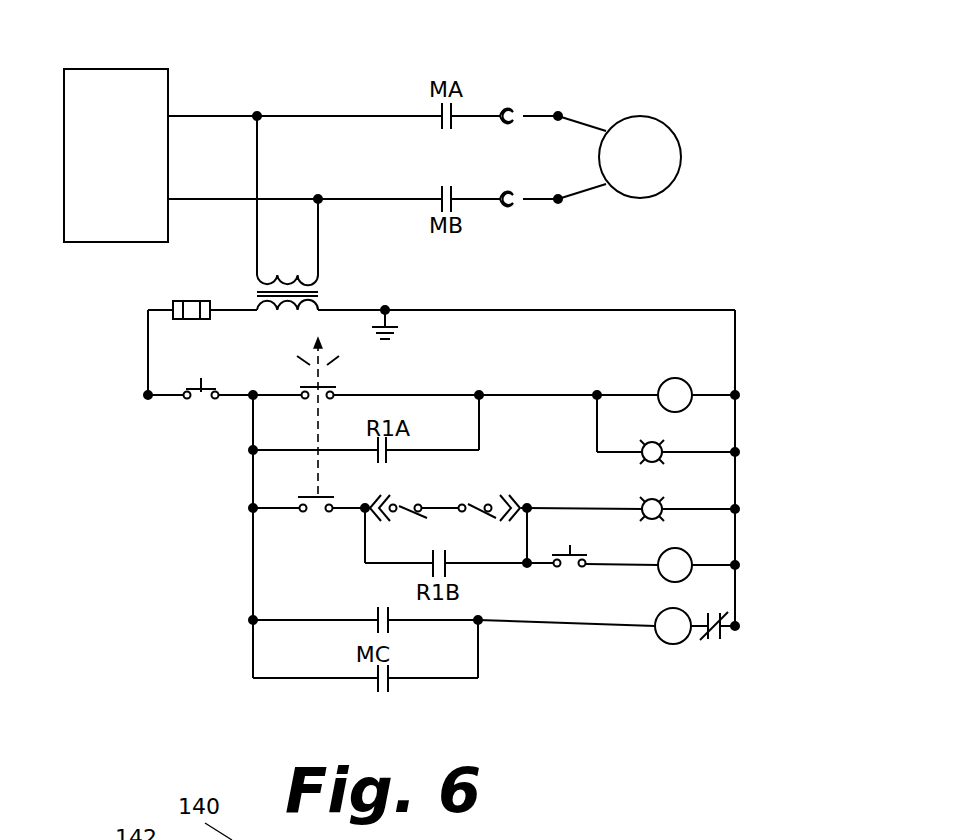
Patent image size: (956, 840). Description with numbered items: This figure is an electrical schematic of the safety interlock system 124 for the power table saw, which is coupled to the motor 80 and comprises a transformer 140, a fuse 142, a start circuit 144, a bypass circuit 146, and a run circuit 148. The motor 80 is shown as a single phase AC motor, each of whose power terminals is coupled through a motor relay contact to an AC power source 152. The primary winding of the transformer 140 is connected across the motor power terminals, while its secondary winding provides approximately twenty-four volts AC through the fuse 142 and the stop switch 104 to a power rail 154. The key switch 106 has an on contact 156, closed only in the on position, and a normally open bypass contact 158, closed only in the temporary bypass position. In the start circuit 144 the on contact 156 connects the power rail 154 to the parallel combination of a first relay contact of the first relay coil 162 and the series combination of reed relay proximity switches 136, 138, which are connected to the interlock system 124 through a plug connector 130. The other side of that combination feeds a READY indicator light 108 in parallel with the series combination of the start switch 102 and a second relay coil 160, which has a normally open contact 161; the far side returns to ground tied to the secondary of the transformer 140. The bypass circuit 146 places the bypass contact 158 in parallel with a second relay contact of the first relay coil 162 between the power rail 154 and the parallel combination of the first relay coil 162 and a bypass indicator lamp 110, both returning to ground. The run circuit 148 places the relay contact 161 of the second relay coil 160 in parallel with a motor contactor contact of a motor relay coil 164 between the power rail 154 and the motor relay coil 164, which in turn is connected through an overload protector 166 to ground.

The AC power source 152 is at (131, 69).
The motor 80 is at (682, 157).
The transformer 140 is at (330, 285).
The interlock system 124 is at (720, 285).
The fuse 142 is at (187, 299).
The power rail 154 is at (248, 498).
The stop switch 104 is at (170, 400).
The key switch 106 is at (312, 378).
The bypass contact 158 is at (333, 388).
The R1 relay coil 162 is at (670, 381).
The bypass circuit 146 is at (790, 407).
The bypass indicator lamp 110 is at (640, 465).
The on contact 156 is at (300, 492).
The plug connector 130 is at (365, 492).
The reed relay proximity switch 136 is at (404, 500).
The reed relay proximity switch 138 is at (474, 498).
The READY indicator light 108 is at (662, 520).
The start switch 102 is at (573, 547).
The R2 relay coil 160 is at (692, 560).
The start circuit 144 is at (750, 532).
The run circuit 148 is at (750, 596).
The R2 contact 161 is at (393, 633).
The motor relay coil 164 is at (683, 642).
The overload protector 166 is at (720, 637).